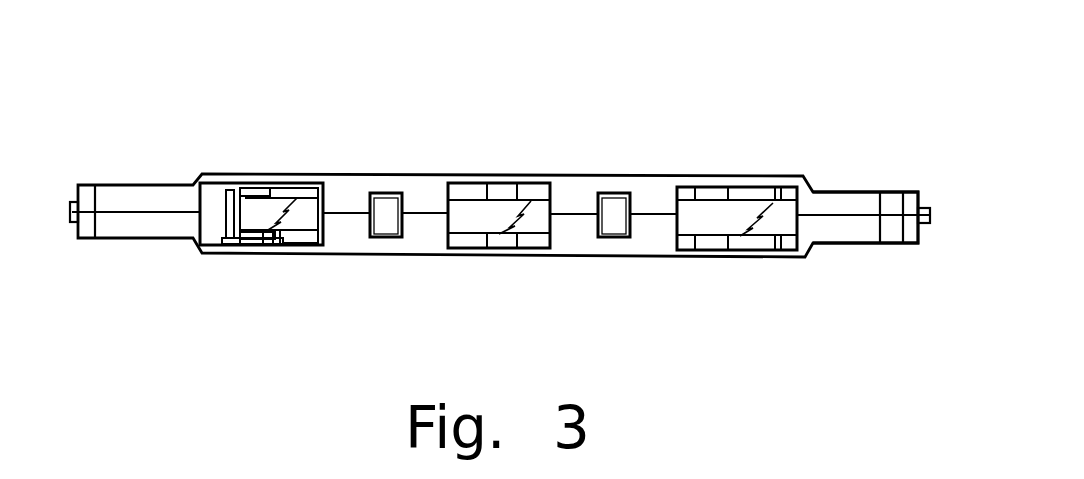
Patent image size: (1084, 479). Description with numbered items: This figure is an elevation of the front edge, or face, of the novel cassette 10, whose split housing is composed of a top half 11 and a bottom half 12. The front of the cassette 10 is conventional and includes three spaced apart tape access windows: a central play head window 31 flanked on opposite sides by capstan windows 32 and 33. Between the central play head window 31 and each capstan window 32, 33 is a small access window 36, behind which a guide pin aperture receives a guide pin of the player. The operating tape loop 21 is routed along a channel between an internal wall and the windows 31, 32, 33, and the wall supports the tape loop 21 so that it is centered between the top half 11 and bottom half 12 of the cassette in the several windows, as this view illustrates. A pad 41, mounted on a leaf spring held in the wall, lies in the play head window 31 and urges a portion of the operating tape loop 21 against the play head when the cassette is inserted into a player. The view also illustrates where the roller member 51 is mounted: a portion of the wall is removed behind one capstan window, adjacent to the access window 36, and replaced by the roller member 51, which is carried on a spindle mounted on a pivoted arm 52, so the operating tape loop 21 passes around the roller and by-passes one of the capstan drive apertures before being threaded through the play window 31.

The cassette 10 is at (533, 74).
The top half 11 is at (661, 176).
The bottom half 12 is at (807, 251).
The operating tape loop 21 is at (768, 231).
The central play head window 31 is at (536, 246).
The capstan window 32 is at (304, 246).
The capstan window 33 is at (688, 244).
The small access window 36 is at (391, 239).
The pad 41 is at (502, 195).
The roller member 51 is at (285, 185).
The arm 52 is at (258, 244).